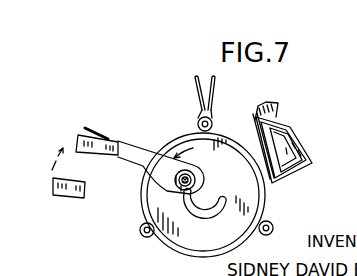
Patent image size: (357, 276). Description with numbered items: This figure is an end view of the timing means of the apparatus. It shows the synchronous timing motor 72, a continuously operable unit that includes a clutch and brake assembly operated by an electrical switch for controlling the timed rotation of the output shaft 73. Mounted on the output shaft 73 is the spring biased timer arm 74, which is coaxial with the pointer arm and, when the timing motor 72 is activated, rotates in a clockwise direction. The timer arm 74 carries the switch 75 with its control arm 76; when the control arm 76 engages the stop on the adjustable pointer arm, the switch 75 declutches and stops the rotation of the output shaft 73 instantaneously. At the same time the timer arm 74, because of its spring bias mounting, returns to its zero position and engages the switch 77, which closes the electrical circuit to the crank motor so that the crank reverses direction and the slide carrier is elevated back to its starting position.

The synchronous timing motor 72 is at (163, 100).
The output shaft 73 is at (197, 181).
The timer arm 74 is at (131, 163).
The switch 75 is at (103, 145).
The control arm 76 is at (105, 137).
The switch 77 is at (63, 190).